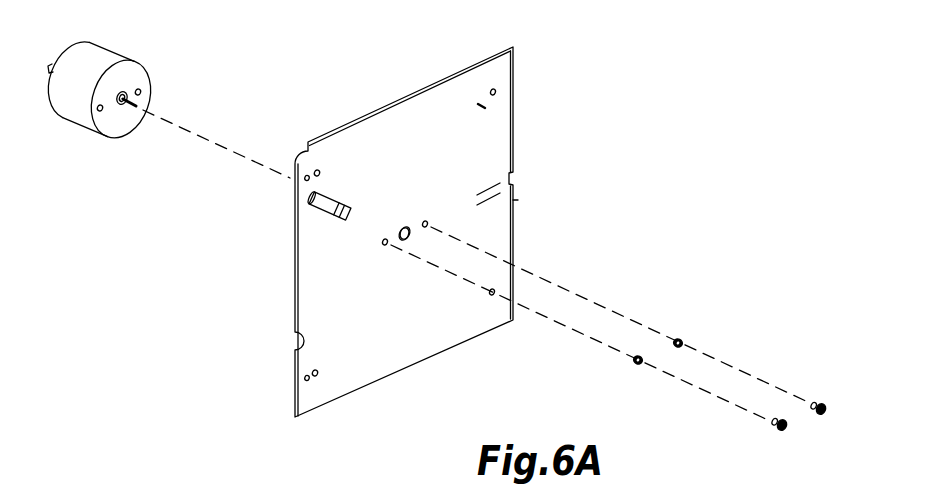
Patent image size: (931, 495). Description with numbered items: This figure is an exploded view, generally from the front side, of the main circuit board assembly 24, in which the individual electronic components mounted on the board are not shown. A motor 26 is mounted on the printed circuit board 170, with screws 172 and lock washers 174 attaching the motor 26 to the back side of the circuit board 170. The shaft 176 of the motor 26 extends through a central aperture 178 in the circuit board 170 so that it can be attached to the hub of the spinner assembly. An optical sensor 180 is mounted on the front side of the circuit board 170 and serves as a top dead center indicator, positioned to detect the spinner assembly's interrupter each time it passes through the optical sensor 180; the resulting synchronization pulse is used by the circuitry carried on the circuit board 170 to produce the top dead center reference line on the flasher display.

The main circuit board assembly 24 is at (548, 142).
The motor 26 is at (126, 58).
The printed circuit board 170 is at (378, 127).
The screws 172 is at (818, 402).
The lock washers 174 is at (679, 339).
The shaft 176 is at (140, 107).
The central aperture 178 is at (406, 227).
The optical sensor 180 is at (327, 197).